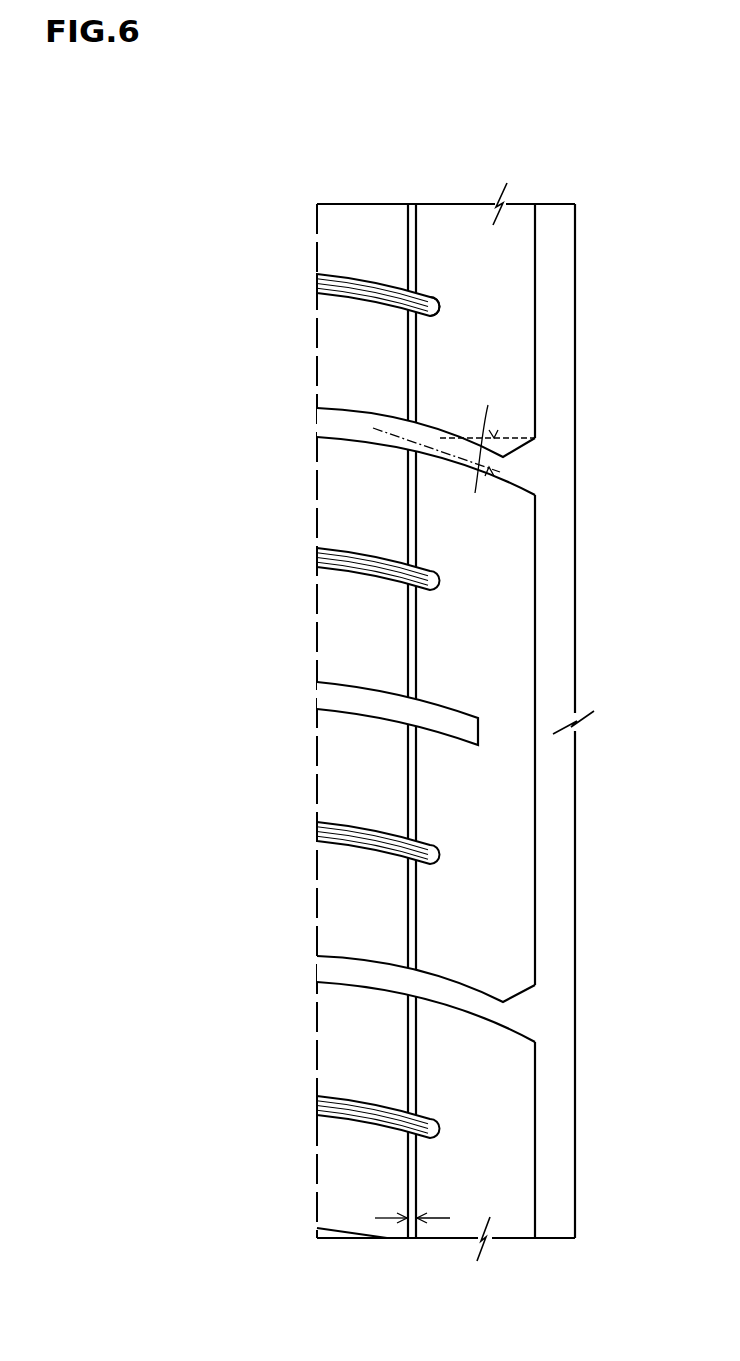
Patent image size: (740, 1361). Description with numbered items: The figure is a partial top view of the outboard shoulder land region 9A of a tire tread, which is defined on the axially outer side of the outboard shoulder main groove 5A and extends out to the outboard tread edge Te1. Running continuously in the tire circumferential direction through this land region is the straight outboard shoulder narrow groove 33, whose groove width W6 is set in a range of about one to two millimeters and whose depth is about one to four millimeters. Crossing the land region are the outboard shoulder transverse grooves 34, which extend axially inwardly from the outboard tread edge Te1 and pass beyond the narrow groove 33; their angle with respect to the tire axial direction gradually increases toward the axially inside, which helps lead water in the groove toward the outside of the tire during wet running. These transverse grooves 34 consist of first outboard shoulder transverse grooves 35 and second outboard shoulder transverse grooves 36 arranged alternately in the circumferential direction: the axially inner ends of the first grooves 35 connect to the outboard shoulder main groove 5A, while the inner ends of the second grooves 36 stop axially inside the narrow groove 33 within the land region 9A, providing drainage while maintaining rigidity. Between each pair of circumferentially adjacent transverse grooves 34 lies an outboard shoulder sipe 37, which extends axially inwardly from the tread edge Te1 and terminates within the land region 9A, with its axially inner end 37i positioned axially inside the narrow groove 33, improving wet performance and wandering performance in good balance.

The outboard tread edge Te1 is at (317, 234).
The outboard shoulder narrow groove 33 is at (412, 238).
The outboard shoulder land region 9A is at (458, 246).
The outboard shoulder main groove 5A is at (553, 246).
The outboard shoulder transverse grooves 34 is at (357, 725).
The first outboard shoulder transverse grooves 35 is at (383, 437).
The second outboard shoulder transverse grooves 36 is at (393, 705).
The outboard shoulder sipes 37 is at (370, 288).
The axially inner ends of the outboard shoulder sipes 37i is at (439, 303).
The groove width of the outboard shoulder narrow groove W6 is at (412, 1240).